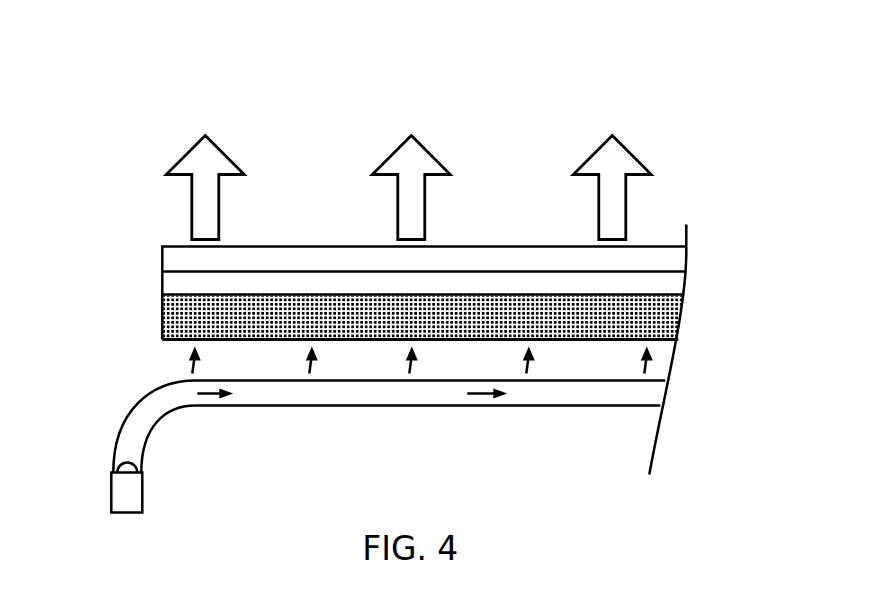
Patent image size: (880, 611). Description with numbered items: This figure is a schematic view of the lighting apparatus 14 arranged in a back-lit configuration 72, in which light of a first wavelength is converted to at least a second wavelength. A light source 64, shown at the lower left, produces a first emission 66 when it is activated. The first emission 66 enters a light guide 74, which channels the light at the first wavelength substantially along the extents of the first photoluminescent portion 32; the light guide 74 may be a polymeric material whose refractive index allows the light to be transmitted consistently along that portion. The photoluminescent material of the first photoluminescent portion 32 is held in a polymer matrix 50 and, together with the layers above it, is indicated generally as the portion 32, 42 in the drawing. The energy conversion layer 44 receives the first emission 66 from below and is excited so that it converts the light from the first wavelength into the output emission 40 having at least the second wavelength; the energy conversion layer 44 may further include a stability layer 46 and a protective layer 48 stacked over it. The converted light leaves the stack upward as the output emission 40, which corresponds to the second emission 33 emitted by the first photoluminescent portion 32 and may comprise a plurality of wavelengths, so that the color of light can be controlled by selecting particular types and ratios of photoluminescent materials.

The lighting apparatus 14 is at (376, 263).
The back-lit configuration 72 is at (620, 41).
The second emission 33 is at (444, 188).
The output emission 40 is at (213, 203).
The first photoluminescent portion 32 is at (358, 342).
The light-emitting layer stack 42 is at (358, 342).
The protective layer 48 is at (167, 259).
The stability layer 46 is at (170, 282).
The energy conversion layer 44 is at (163, 325).
The polymer matrix 50 is at (143, 351).
The light guide 74 is at (357, 408).
The light source 64 is at (135, 493).
The first emission 66 is at (196, 371).